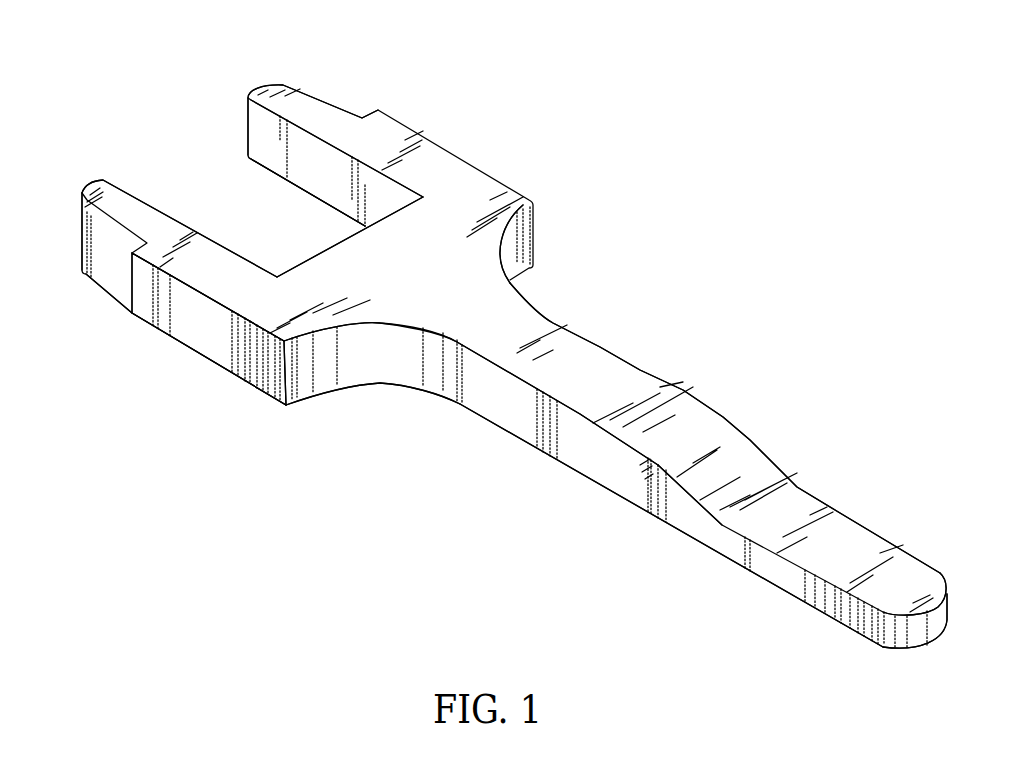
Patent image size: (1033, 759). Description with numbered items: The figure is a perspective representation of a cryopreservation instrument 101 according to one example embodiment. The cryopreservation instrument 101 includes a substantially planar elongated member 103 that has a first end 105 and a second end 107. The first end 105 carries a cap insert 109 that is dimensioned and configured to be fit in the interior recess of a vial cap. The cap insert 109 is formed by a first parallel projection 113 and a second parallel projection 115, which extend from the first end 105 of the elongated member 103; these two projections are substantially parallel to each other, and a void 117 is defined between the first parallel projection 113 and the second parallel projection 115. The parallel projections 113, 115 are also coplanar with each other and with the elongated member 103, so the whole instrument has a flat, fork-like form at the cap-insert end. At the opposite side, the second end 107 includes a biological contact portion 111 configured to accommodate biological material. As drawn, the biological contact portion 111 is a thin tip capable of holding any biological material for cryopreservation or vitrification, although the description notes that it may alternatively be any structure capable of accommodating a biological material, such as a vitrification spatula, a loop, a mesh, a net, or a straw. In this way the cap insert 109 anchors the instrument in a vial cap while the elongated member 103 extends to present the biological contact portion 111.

The cryopreservation instrument 101 is at (595, 235).
The elongated member 103 is at (600, 343).
The first end 105 is at (382, 382).
The second end 107 is at (700, 540).
The cap insert 109 is at (198, 358).
The biological contact portion 111 is at (868, 525).
The first parallel projection 113 is at (284, 83).
The second parallel projection 115 is at (81, 250).
The void 117 is at (197, 167).